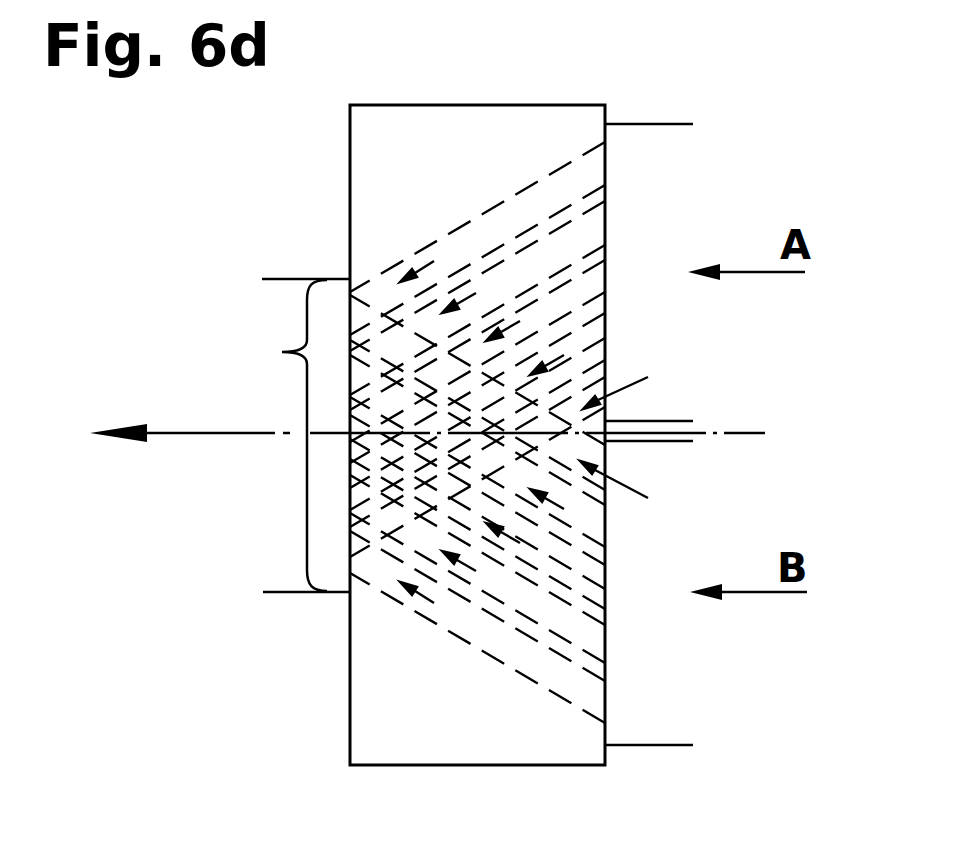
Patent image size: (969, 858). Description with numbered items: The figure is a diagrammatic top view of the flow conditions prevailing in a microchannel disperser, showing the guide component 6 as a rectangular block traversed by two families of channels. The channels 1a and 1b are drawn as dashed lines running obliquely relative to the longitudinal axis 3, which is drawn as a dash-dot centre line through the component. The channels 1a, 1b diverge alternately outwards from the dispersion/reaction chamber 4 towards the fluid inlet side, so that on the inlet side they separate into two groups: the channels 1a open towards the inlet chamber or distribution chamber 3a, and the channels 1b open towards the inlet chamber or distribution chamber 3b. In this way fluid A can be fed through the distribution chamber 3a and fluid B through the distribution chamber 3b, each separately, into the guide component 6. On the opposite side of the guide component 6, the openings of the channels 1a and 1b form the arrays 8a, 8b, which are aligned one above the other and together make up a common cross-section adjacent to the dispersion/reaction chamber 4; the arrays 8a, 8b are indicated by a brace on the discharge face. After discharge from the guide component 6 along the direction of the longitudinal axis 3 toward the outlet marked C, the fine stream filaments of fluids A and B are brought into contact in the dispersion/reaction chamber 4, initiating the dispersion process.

The channels 1a is at (522, 268).
The channels 1b is at (531, 594).
The longitudinal axis 3 is at (275, 437).
The inlet chamber or distribution chamber 3a is at (698, 214).
The inlet chamber or distribution chamber 3b is at (649, 593).
The dispersion/reaction chamber 4 is at (297, 303).
The guide component 6 is at (368, 153).
The array of channel openings 8a is at (251, 436).
The array of channel openings 8b is at (282, 352).